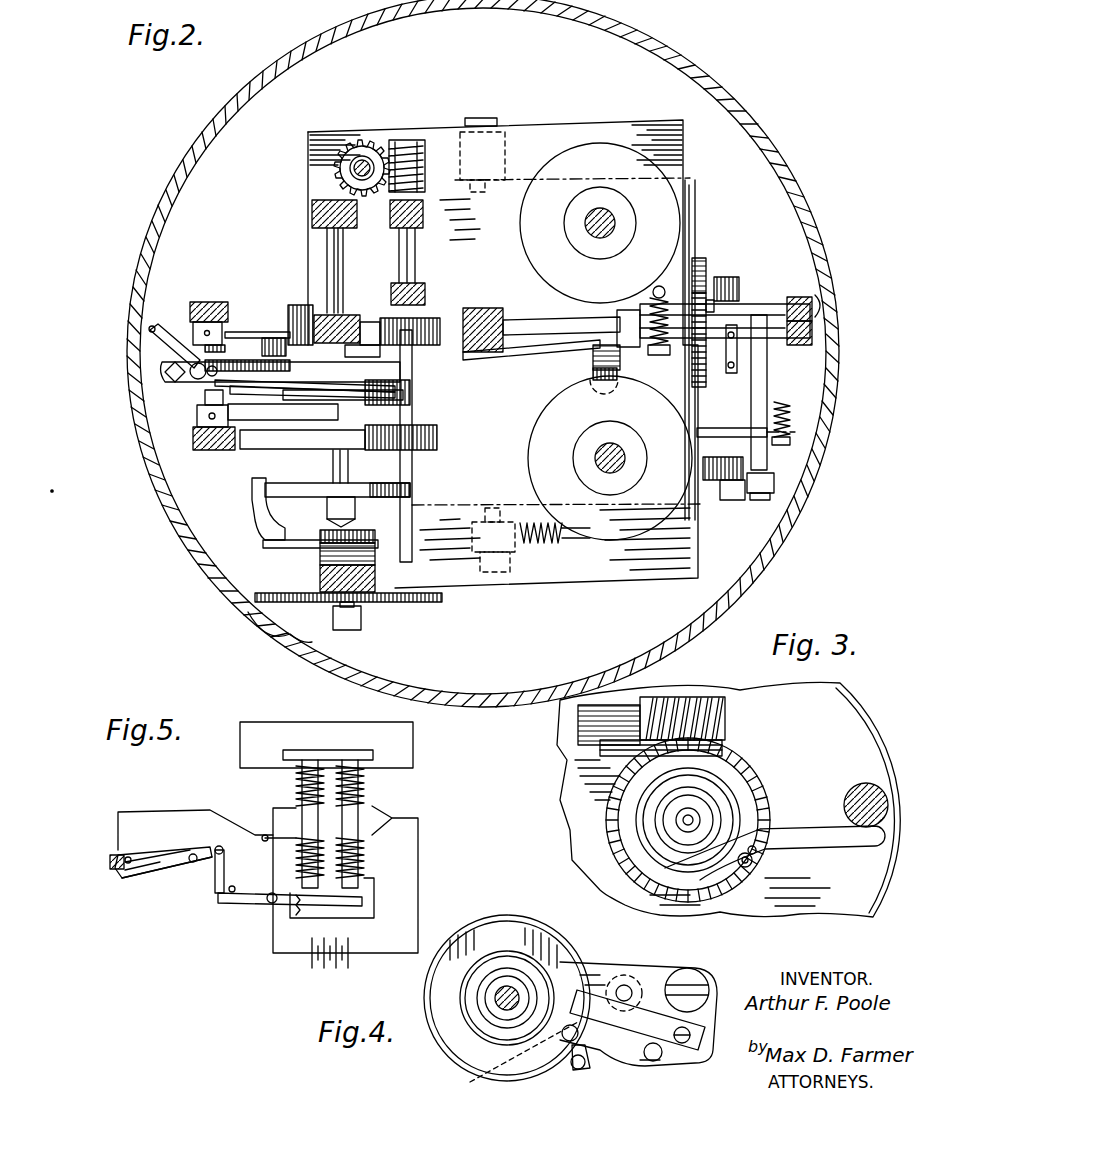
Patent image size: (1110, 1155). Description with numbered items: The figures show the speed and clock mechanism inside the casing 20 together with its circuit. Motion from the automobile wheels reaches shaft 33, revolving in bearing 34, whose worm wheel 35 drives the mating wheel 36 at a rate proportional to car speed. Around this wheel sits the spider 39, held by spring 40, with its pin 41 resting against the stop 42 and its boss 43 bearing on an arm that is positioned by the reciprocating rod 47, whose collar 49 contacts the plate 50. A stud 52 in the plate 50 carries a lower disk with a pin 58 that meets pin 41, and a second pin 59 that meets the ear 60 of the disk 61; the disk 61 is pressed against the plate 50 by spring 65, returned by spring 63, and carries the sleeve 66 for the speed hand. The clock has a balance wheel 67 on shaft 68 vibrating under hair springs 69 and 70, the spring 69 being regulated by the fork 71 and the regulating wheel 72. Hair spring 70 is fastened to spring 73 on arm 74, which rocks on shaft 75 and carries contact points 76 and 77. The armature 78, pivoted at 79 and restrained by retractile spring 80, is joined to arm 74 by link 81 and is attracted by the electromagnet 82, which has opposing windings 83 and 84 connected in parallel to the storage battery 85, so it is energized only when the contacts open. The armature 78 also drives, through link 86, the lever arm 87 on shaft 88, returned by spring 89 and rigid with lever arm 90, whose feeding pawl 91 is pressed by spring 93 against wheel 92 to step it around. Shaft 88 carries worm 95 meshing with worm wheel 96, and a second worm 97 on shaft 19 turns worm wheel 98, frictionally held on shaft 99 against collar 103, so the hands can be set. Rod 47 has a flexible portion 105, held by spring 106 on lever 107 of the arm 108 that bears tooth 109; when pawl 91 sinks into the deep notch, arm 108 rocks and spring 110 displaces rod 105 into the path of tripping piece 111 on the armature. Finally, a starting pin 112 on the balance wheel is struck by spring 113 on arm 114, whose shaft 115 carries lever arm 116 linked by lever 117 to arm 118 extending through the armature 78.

In FIG. 2, the shaft 19 is at (416, 250).
In FIG. 2, the casing 20 is at (185, 520).
In FIG. 3, the shaft 33 is at (605, 752).
In FIG. 3, the bearing 34 is at (578, 716).
In FIG. 3, the worm wheel 35 is at (695, 705).
In FIG. 3, the mating wheel 36 is at (765, 795).
In FIG. 3, the spider 39 is at (640, 843).
In FIG. 3, the spring 40 is at (640, 798).
In FIG. 3, the pin 41 is at (835, 846).
In FIG. 4, the pin 41 is at (480, 1070).
In FIG. 3, the stop 42 is at (816, 833).
In FIG. 3, the boss 43 is at (670, 822).
In FIG. 4, the rod 47 is at (632, 990).
In FIG. 4, the collar 49 is at (675, 980).
In FIG. 4, the plate 50 is at (720, 975).
In FIG. 4, the stud 52 is at (495, 998).
In FIG. 3, the pin 58 is at (753, 864).
In FIG. 4, the pin 58 is at (563, 1050).
In FIG. 4, the second pin 59 is at (645, 1058).
In FIG. 4, the ear 60 is at (575, 1070).
In FIG. 4, the disk 61 is at (455, 1055).
In FIG. 4, the returning spring 63 is at (468, 1018).
In FIG. 4, the spring 65 is at (585, 995).
In FIG. 4, the sleeve 66 is at (490, 990).
In FIG. 2, the balance wheel 67 is at (255, 450).
In FIG. 2, the shaft 68 is at (333, 468).
In FIG. 5, the shaft 68 is at (193, 863).
In FIG. 2, the hair spring 69 is at (310, 495).
In FIG. 2, the hair spring 70 is at (262, 332).
In FIG. 5, the hair spring 70 is at (175, 847).
In FIG. 2, the fork 71 is at (252, 515).
In FIG. 2, the regulating wheel 72 is at (300, 593).
In FIG. 2, the spring 73 is at (400, 392).
In FIG. 5, the spring 73 is at (175, 870).
In FIG. 2, the arm 74 is at (400, 380).
In FIG. 5, the arm 74 is at (148, 872).
In FIG. 2, the shaft 75 is at (327, 246).
In FIG. 2, the contact point 76 is at (168, 340).
In FIG. 5, the contact point 76 is at (117, 872).
In FIG. 2, the second contact point 77 is at (175, 382).
In FIG. 5, the second contact point 77 is at (140, 855).
In FIG. 2, the armature 78 is at (400, 468).
In FIG. 5, the armature 78 is at (240, 905).
In FIG. 2, the pivot 79 is at (490, 118).
In FIG. 5, the pivot 79 is at (268, 905).
In FIG. 2, the retractile spring 80 is at (545, 543).
In FIG. 5, the retractile spring 80 is at (300, 912).
In FIG. 2, the link 81 is at (410, 396).
In FIG. 5, the link 81 is at (224, 865).
In FIG. 2, the electromagnet 82 is at (600, 190).
In FIG. 5, the electromagnet 82 is at (322, 760).
In FIG. 5, the winding 83 is at (368, 785).
In FIG. 5, the winding 84 is at (366, 860).
In FIG. 5, the battery 85 is at (330, 970).
In FIG. 2, the link 86 is at (770, 478).
In FIG. 2, the lever arm 87 is at (768, 390).
In FIG. 2, the shaft 88 is at (565, 320).
In FIG. 2, the spring 89 is at (790, 408).
In FIG. 2, the lever arm 90 is at (739, 288).
In FIG. 2, the feeding pawl 91 is at (712, 302).
In FIG. 2, the wheel 92 is at (703, 387).
In FIG. 2, the spring 93 is at (737, 355).
In FIG. 2, the worm 95 is at (478, 308).
In FIG. 2, the worm wheel 96 is at (420, 318).
In FIG. 2, the second worm 97 is at (408, 142).
In FIG. 2, the worm wheel 98 is at (335, 172).
In FIG. 2, the shaft 99 is at (363, 158).
In FIG. 2, the collar 103 is at (340, 156).
In FIG. 2, the flexible portion 105 is at (590, 350).
In FIG. 2, the spring 106 is at (705, 262).
In FIG. 2, the lever 107 is at (655, 355).
In FIG. 2, the arm 108 is at (628, 310).
In FIG. 2, the single tooth 109 is at (688, 350).
In FIG. 2, the spring 110 is at (530, 312).
In FIG. 2, the tripping piece 111 is at (590, 378).
In FIG. 2, the starting pin 112 is at (283, 395).
In FIG. 2, the spring 113 is at (437, 432).
In FIG. 2, the arm 114 is at (205, 398).
In FIG. 2, the shaft 115 is at (210, 302).
In FIG. 2, the lever arm 116 is at (238, 343).
In FIG. 2, the lever 117 is at (302, 305).
In FIG. 2, the arm 118 is at (330, 320).